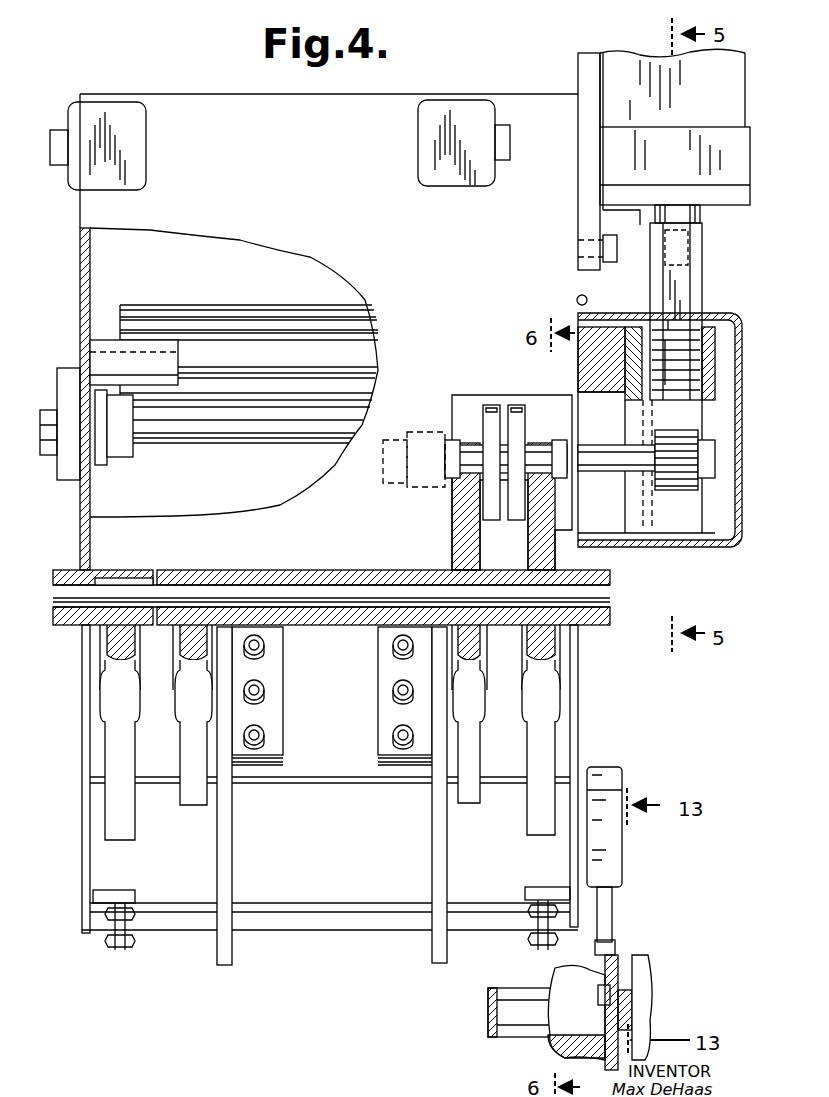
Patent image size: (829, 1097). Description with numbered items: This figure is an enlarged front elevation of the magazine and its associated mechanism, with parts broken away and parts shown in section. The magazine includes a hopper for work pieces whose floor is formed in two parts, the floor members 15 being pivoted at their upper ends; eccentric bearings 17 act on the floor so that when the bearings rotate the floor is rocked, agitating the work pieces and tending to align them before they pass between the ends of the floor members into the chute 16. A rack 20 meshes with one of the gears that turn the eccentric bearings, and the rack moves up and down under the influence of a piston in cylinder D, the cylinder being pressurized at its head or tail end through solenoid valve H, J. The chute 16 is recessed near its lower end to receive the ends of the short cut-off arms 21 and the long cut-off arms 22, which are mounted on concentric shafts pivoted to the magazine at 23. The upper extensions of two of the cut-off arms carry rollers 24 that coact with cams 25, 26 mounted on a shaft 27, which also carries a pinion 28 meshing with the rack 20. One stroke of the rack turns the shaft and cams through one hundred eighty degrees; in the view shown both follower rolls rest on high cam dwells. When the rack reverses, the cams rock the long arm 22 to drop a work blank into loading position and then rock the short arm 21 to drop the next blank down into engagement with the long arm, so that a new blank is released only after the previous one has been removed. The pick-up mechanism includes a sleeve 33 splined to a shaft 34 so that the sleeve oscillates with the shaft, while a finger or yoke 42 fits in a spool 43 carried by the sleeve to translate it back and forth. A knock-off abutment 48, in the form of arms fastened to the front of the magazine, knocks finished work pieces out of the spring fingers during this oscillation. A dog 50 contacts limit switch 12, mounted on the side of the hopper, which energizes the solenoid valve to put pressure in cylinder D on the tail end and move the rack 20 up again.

The solenoid valve H is at (105, 118).
The solenoid valve J is at (450, 118).
The cylinder D is at (622, 85).
The limit switch 12 is at (640, 755).
The floor members 15 is at (345, 393).
The chute 16 is at (82, 705).
The eccentric bearings 17 is at (130, 457).
The rack 20 is at (690, 285).
The short cut-off arms 21 is at (195, 808).
The long cut-off arms 22 is at (125, 842).
The concentric shafts 23 is at (310, 582).
The rollers 24 is at (490, 445).
The cam 25 is at (491, 410).
The cam 26 is at (516, 410).
The shaft 27 is at (597, 455).
The pinion 28 is at (685, 460).
The sleeve 33 is at (548, 1045).
The shaft 34 is at (500, 995).
The yoke 42 is at (625, 1010).
The spool 43 is at (640, 960).
The knock-off abutment 48 is at (225, 965).
The dog 50 is at (598, 992).